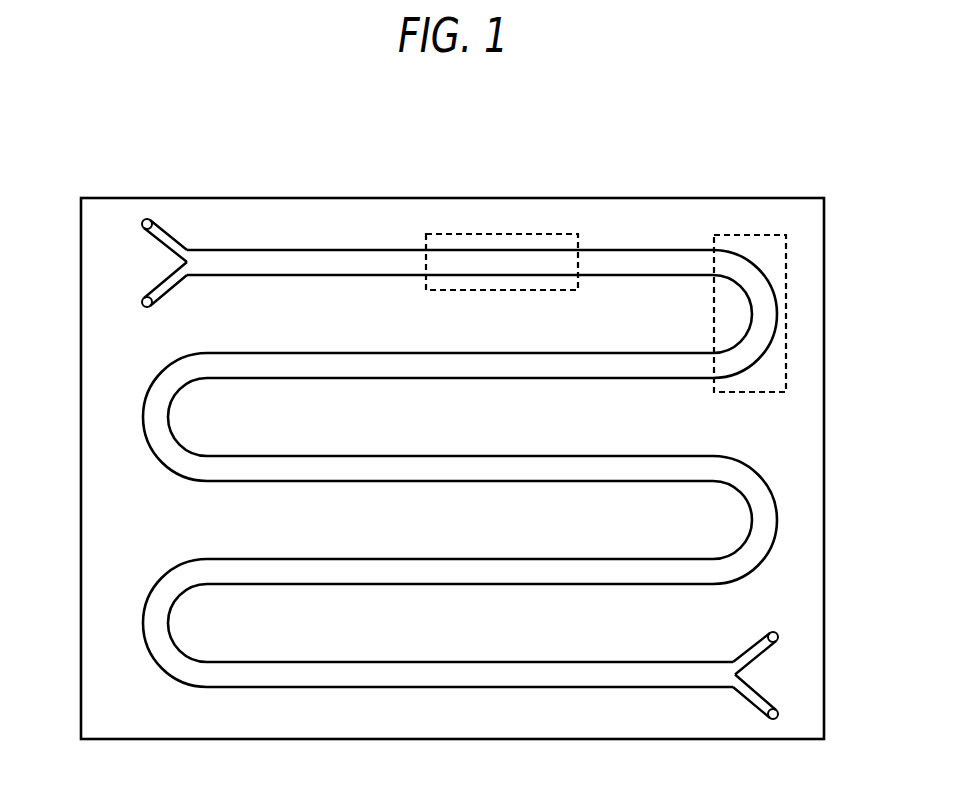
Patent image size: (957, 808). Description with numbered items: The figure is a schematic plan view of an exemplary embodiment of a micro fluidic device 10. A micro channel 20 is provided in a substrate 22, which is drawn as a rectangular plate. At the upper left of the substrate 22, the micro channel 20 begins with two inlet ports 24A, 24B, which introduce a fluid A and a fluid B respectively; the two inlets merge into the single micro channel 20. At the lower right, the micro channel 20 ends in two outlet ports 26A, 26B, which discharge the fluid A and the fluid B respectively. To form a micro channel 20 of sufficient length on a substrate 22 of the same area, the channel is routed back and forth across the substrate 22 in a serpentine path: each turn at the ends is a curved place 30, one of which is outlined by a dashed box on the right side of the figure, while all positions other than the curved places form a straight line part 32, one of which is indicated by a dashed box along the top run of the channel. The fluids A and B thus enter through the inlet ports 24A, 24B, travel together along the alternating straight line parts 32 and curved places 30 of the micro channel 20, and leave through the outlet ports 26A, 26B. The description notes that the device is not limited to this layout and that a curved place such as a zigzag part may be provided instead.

The micro fluidic device 10 is at (680, 187).
The micro channel 20 is at (368, 250).
The substrate 22 is at (289, 220).
The inlet port 24A is at (142, 224).
The inlet port 24B is at (142, 302).
The outlet port 26A is at (778, 637).
The outlet port 26B is at (778, 714).
The curved place 30 is at (786, 278).
The straight line part 32 is at (501, 234).
The fluid A is at (176, 255).
The fluid B is at (179, 273).